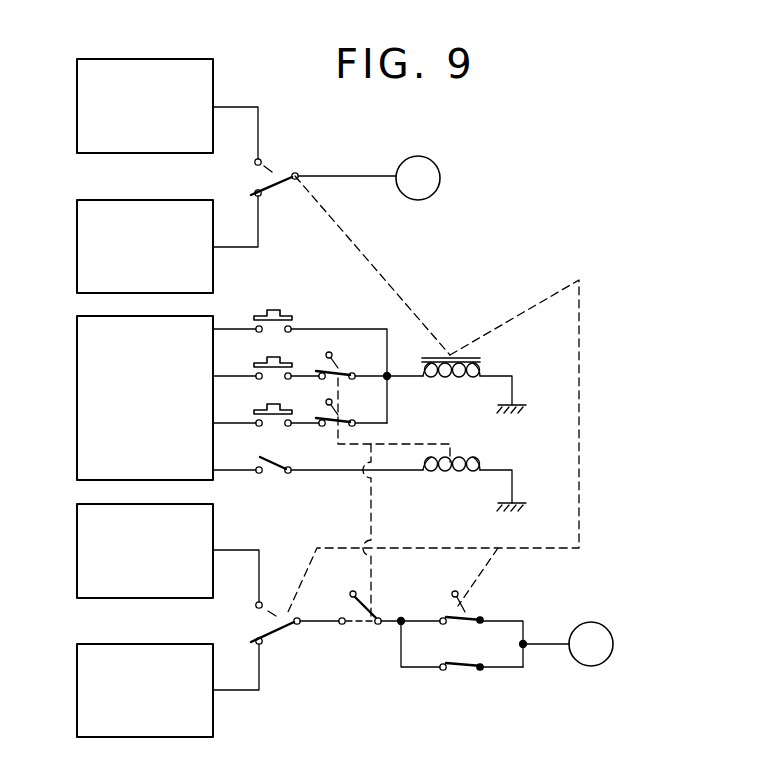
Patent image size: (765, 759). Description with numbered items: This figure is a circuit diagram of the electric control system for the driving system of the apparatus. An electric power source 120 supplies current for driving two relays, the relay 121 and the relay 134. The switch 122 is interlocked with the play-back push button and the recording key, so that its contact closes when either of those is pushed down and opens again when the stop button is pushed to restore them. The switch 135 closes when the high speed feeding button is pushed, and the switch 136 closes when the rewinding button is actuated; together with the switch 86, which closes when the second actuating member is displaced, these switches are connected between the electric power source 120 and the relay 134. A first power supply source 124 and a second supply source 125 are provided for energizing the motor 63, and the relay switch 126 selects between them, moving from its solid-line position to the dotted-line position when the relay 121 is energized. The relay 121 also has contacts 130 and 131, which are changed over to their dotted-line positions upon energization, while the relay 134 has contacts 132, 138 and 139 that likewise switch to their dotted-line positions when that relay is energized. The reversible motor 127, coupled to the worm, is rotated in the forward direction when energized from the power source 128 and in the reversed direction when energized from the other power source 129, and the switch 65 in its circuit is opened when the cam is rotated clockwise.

The motor 63 is at (441, 178).
The switch 65 is at (455, 672).
The switch 86 is at (279, 462).
The electric power source 120 is at (77, 403).
The relay 121 is at (487, 370).
The switch 122 is at (293, 316).
The first power supply source 124 is at (127, 59).
The second supply source 125 is at (127, 200).
The relay switch 126 is at (270, 166).
The reversible motor 127 is at (603, 622).
The power source 128 is at (213, 513).
The power source 129 is at (213, 717).
The contact 130 is at (266, 625).
The contact 131 is at (448, 598).
The contact 132 is at (352, 607).
The relay 134 is at (485, 466).
The switch 135 is at (262, 360).
The switch 136 is at (262, 408).
The contact 138 is at (338, 366).
The contact 139 is at (342, 414).